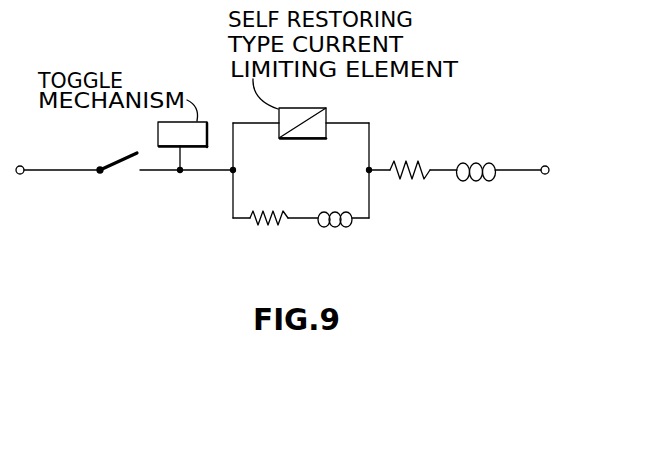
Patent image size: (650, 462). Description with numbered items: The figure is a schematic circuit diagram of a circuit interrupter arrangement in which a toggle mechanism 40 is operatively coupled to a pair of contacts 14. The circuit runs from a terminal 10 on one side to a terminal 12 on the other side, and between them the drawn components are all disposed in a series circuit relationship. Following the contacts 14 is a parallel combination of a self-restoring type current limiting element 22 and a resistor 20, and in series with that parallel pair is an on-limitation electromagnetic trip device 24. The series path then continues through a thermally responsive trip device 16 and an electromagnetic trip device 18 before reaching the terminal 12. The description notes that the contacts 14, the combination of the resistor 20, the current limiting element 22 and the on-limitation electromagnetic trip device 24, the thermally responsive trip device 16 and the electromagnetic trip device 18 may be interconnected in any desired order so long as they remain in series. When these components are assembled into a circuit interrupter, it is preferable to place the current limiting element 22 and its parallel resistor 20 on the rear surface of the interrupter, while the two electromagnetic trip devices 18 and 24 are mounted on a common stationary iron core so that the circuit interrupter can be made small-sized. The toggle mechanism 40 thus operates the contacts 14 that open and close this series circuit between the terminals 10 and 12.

The input terminal 10 is at (21, 175).
The output terminal 12 is at (543, 175).
The pair of contacts 14 is at (117, 162).
The thermally responsive trip device 16 is at (408, 175).
The electromagnetic trip device 18 is at (467, 185).
The resistor 20 is at (267, 222).
The self-restoring type current limiting element 22 is at (320, 106).
The on-limitation electromagnetic trip device 24 is at (333, 228).
The toggle mechanism 40 is at (159, 130).